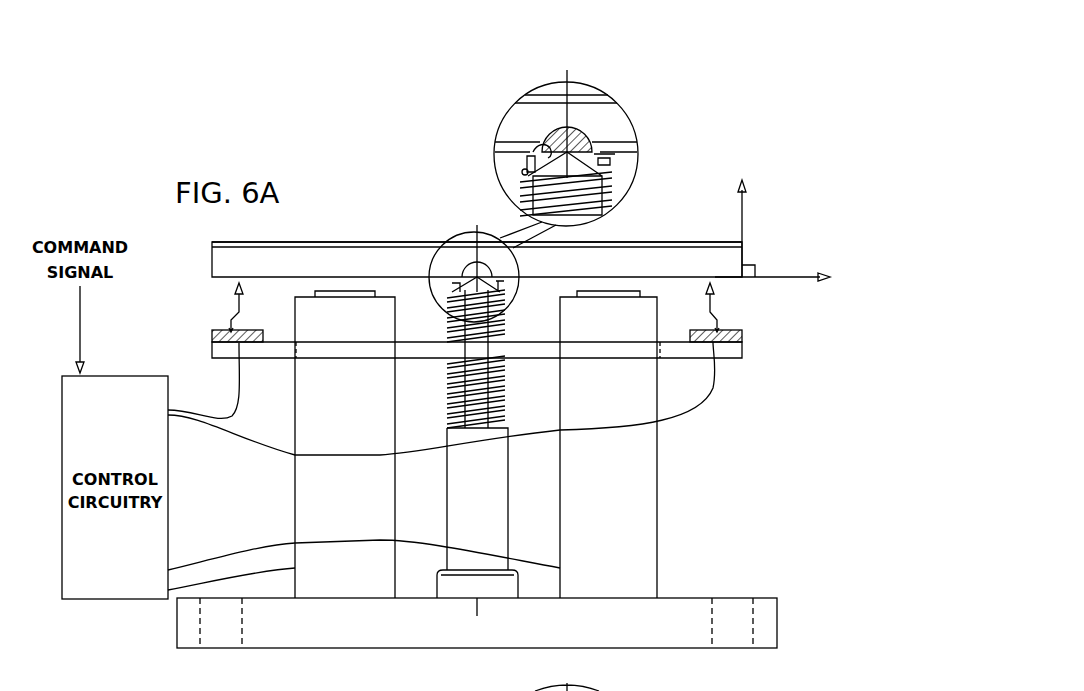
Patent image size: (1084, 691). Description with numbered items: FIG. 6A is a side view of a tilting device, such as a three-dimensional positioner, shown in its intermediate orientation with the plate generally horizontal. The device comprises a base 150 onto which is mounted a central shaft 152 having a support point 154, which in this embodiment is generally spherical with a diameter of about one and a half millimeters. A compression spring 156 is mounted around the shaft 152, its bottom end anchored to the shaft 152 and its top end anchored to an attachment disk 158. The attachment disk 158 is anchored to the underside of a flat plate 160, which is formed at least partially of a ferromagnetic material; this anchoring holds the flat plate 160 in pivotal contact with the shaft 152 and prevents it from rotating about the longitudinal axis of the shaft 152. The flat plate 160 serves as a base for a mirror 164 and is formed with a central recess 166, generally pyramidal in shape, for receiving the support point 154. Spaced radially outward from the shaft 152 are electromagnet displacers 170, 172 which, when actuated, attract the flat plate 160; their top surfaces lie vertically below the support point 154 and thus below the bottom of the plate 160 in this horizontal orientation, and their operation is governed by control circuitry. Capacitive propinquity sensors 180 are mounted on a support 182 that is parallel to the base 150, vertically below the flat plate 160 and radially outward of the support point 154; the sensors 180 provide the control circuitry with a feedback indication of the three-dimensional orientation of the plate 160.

The base 150 is at (280, 642).
The central shaft 152 is at (502, 484).
The support point 154 is at (500, 269).
The compression spring 156 is at (498, 328).
The attachment disk 158 is at (447, 236).
The flat plate 160 is at (214, 264).
The mirror 164 is at (356, 242).
The central recess 166 is at (538, 155).
The displacer 170 is at (638, 525).
The displacer 172 is at (297, 500).
The capacitive sensors 180 is at (212, 336).
The support 182 is at (735, 357).